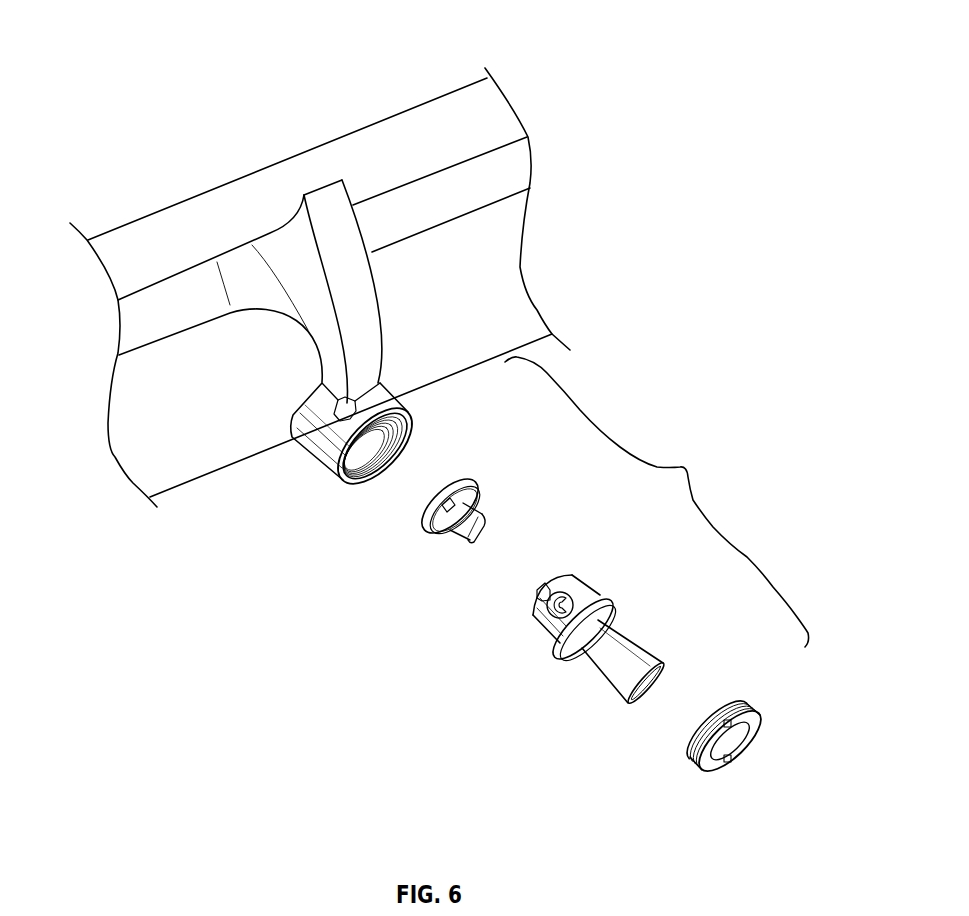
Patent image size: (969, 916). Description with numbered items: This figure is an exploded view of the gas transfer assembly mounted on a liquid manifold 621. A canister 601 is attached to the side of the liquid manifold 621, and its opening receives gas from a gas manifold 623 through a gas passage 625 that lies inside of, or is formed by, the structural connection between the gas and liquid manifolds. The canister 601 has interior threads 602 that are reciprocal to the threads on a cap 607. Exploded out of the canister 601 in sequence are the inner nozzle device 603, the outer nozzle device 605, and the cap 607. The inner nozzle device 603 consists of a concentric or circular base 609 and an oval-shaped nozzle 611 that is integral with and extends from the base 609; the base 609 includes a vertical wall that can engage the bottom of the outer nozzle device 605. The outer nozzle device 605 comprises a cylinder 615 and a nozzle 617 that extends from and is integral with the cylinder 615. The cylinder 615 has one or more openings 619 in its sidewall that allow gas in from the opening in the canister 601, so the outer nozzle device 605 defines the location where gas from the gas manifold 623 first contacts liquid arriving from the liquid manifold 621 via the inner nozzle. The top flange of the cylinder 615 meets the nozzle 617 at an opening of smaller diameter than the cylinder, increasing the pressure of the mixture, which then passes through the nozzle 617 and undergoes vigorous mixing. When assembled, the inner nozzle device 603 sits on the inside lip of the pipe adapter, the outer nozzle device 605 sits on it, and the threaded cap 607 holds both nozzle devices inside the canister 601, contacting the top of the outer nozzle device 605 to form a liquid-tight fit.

The canister 601 is at (330, 468).
The interior threads 602 is at (405, 436).
The inner nozzle device 603 is at (432, 529).
The outer nozzle device 605 is at (555, 655).
The cap 607 is at (690, 766).
The base 609 is at (475, 480).
The nozzle 611 is at (485, 515).
The cylinder 615 is at (533, 618).
The nozzle 617 is at (643, 648).
The openings 619 is at (548, 595).
The liquid manifold 621 is at (440, 363).
The gas manifold 623 is at (388, 133).
The gas passage 625 is at (310, 350).